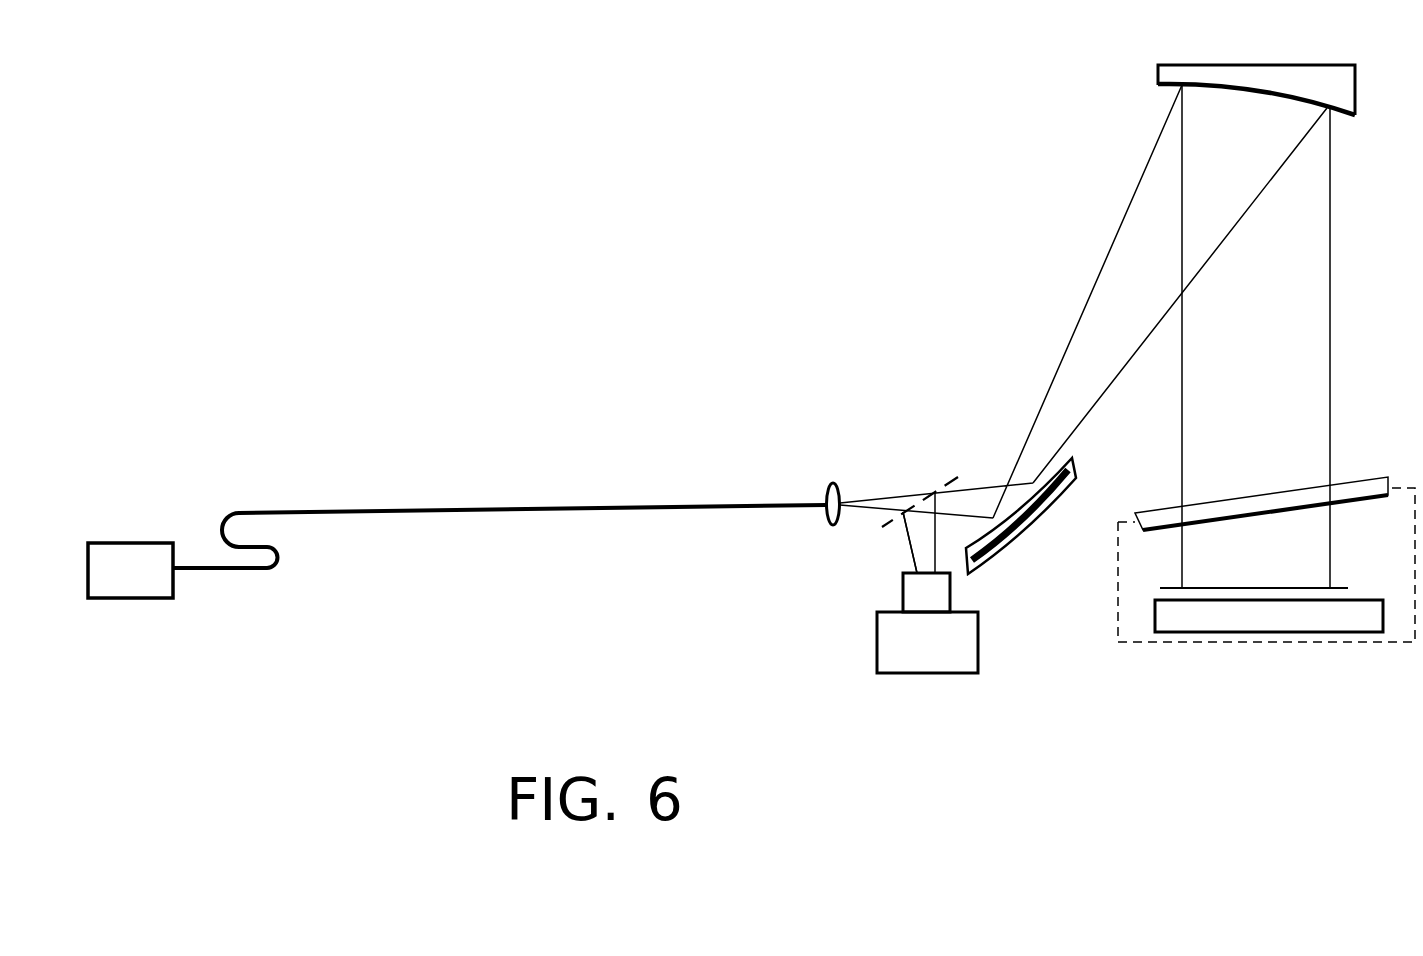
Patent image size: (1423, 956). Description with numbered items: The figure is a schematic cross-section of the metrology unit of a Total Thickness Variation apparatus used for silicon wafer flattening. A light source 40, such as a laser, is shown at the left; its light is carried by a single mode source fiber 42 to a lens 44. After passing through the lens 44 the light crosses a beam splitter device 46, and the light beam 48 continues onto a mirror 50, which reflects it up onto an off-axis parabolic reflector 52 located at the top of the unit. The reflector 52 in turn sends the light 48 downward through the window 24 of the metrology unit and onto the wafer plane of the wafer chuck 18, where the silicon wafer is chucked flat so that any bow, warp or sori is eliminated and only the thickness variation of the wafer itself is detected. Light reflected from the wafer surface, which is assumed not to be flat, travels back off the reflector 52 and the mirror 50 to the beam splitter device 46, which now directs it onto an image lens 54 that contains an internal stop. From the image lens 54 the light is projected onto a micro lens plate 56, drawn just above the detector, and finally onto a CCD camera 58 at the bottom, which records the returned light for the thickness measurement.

The wafer chuck 18 is at (1360, 594).
The window 24 is at (1340, 483).
The light source 40 is at (92, 542).
The single mode source fiber 42 is at (449, 508).
The lens 44 is at (838, 482).
The beam splitter device 46 is at (940, 487).
The light beam 48 is at (991, 484).
The mirror 50 is at (1046, 498).
The off-axis parabolic reflector 52 is at (1357, 108).
The image lens 54 is at (915, 572).
The micro lens plate 56 is at (950, 590).
The CCD camera 58 is at (927, 678).